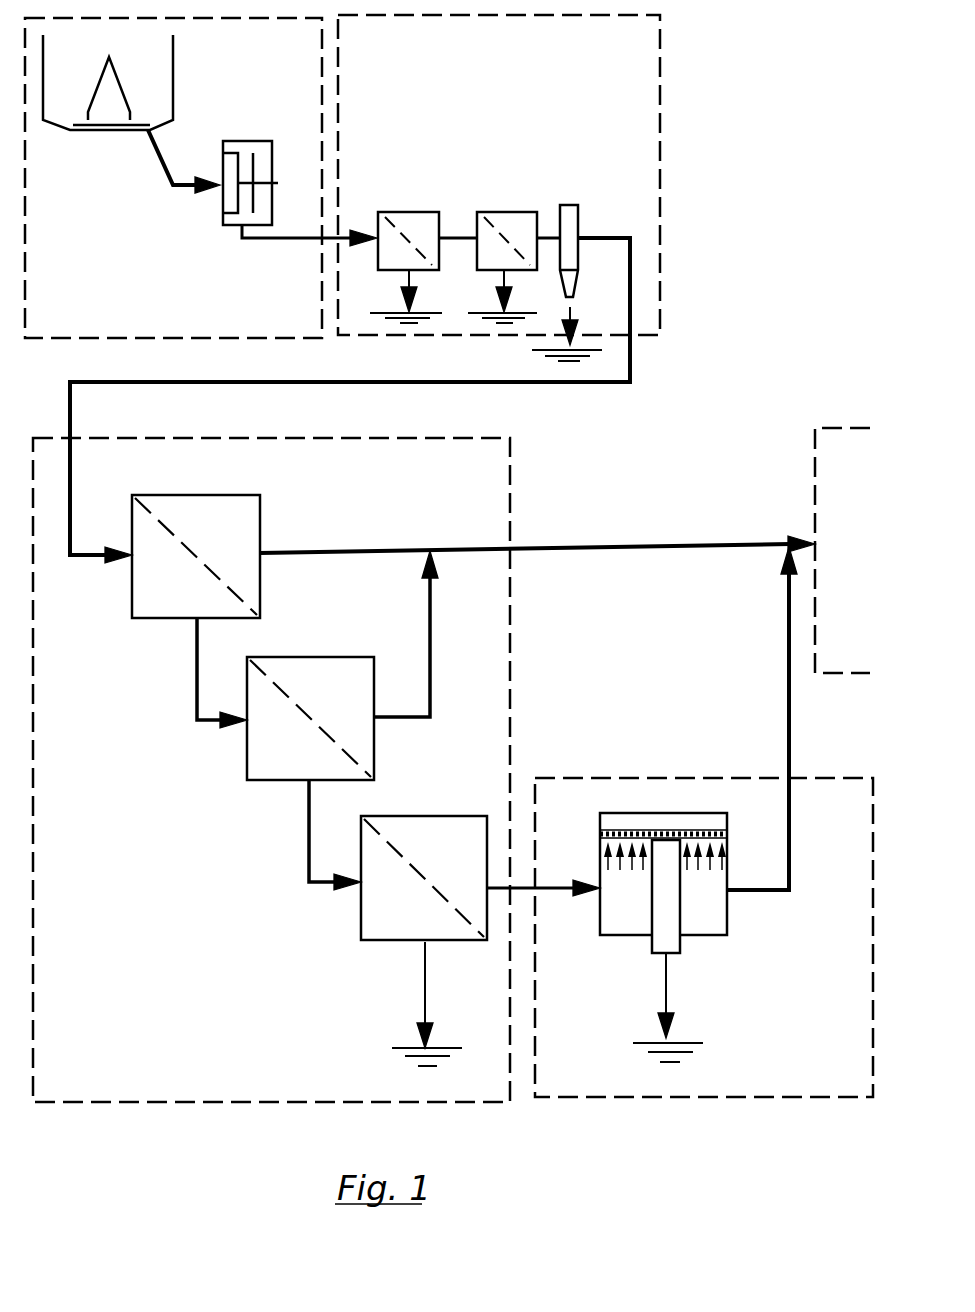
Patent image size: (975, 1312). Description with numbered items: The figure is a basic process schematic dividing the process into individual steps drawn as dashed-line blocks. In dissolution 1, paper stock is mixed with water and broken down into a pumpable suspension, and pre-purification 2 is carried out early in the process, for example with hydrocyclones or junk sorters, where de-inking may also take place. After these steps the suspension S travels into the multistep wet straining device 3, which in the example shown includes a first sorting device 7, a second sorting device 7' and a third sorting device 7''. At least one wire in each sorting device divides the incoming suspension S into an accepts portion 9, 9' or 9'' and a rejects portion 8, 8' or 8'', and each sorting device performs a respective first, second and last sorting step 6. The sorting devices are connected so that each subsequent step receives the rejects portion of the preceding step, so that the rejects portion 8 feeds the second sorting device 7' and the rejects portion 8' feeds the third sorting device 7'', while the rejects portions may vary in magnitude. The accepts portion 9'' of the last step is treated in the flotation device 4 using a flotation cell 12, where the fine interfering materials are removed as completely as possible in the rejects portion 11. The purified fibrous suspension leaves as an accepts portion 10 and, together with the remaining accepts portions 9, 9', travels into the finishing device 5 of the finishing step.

The dissolution 1 is at (306, 61).
The pre-purification 2 is at (640, 51).
The wet straining device 3 is at (493, 474).
The flotation device 4 is at (857, 809).
The finishing device 5 is at (855, 479).
The sorting step 6 is at (370, 904).
The first sorting device 7 is at (196, 556).
The second sorting device 7' is at (310, 718).
The third sorting device 7'' is at (424, 878).
The rejects portion 8 is at (196, 673).
The rejects portion 8' is at (305, 835).
The rejects portion 8'' is at (409, 1004).
The accepts portion 9 is at (537, 516).
The accepts portion 9' is at (402, 634).
The accepts portion 9'' is at (543, 949).
The accepts portion 10 is at (787, 663).
The rejects portion 11 is at (672, 992).
The flotation cell 12 is at (718, 922).
The suspension S is at (610, 378).